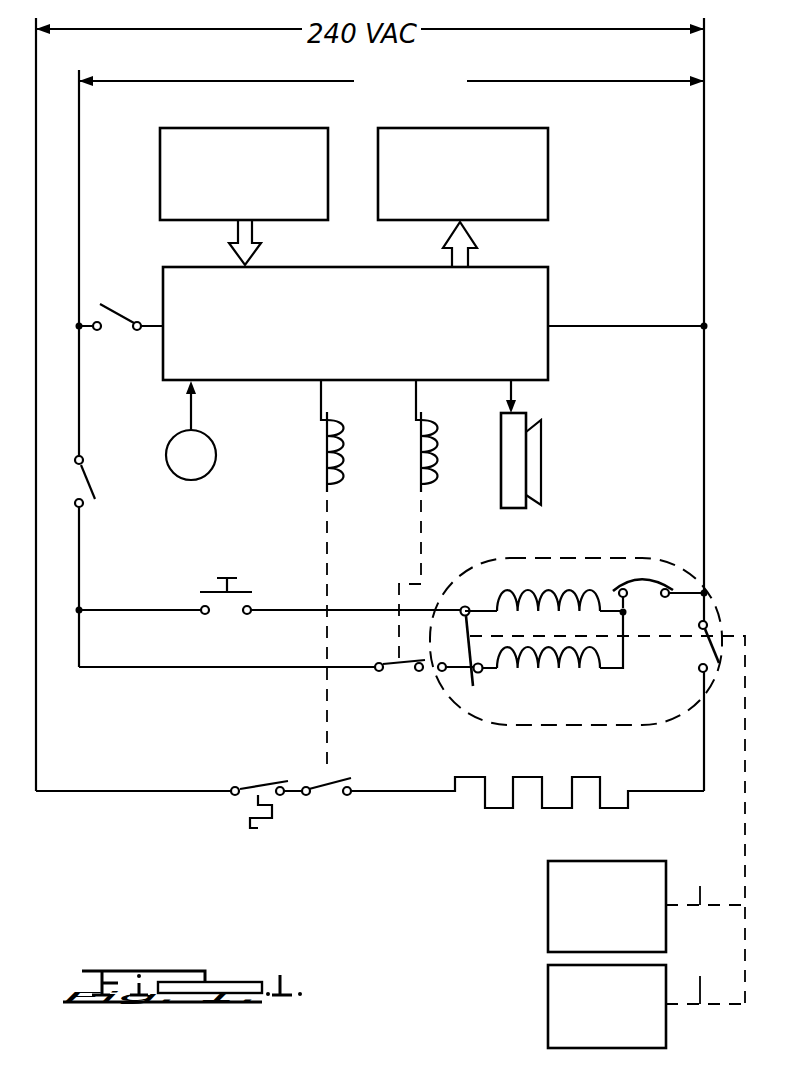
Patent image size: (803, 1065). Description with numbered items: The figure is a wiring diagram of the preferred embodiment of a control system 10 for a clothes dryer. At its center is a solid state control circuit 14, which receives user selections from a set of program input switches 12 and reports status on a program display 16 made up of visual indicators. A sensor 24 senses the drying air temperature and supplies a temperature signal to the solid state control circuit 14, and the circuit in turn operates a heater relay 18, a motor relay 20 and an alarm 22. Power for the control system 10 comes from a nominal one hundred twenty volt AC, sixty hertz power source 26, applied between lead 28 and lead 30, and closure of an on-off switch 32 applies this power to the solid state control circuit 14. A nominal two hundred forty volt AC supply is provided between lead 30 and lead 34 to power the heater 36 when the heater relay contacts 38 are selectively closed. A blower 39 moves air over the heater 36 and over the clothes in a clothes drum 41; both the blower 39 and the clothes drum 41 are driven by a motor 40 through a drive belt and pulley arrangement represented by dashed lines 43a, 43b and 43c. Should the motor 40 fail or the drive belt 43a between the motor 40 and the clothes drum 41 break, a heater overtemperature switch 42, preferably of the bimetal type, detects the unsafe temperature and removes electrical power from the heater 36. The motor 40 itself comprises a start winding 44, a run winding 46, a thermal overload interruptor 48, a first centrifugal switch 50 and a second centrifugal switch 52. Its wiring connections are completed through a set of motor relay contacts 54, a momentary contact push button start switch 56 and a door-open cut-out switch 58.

The control system 10 is at (572, 261).
The program input switches 12 is at (300, 225).
The solid state control circuit 14 is at (357, 267).
The program display 16 is at (548, 170).
The heater relay 18 is at (312, 516).
The motor relay 20 is at (412, 522).
The alarm 22 is at (543, 499).
The sensor 24 is at (205, 477).
The power source 26 is at (455, 101).
The lead 28 is at (79, 112).
The lead 30 is at (704, 122).
The on-off switch 32 is at (128, 292).
The lead 34 is at (36, 56).
The heater 36 is at (476, 797).
The heater relay contacts 38 is at (345, 775).
The blower 39 is at (548, 912).
The motor 40 is at (452, 707).
The clothes drum 41 is at (548, 1000).
The heater overtemperature switch 42 is at (256, 783).
The drive belt 43a is at (738, 799).
The drive belt and pulley connection 43b is at (702, 880).
The drive belt and pulley connection 43c is at (700, 976).
The start winding 44 is at (585, 672).
The run winding 46 is at (581, 593).
The thermal overload interruptor 48 is at (653, 583).
The first centrifugal switch 50 is at (464, 645).
The second centrifugal switch 52 is at (698, 648).
The motor relay contacts 54 is at (374, 681).
The start switch 56 is at (203, 596).
The door-open cut-out switch 58 is at (94, 482).